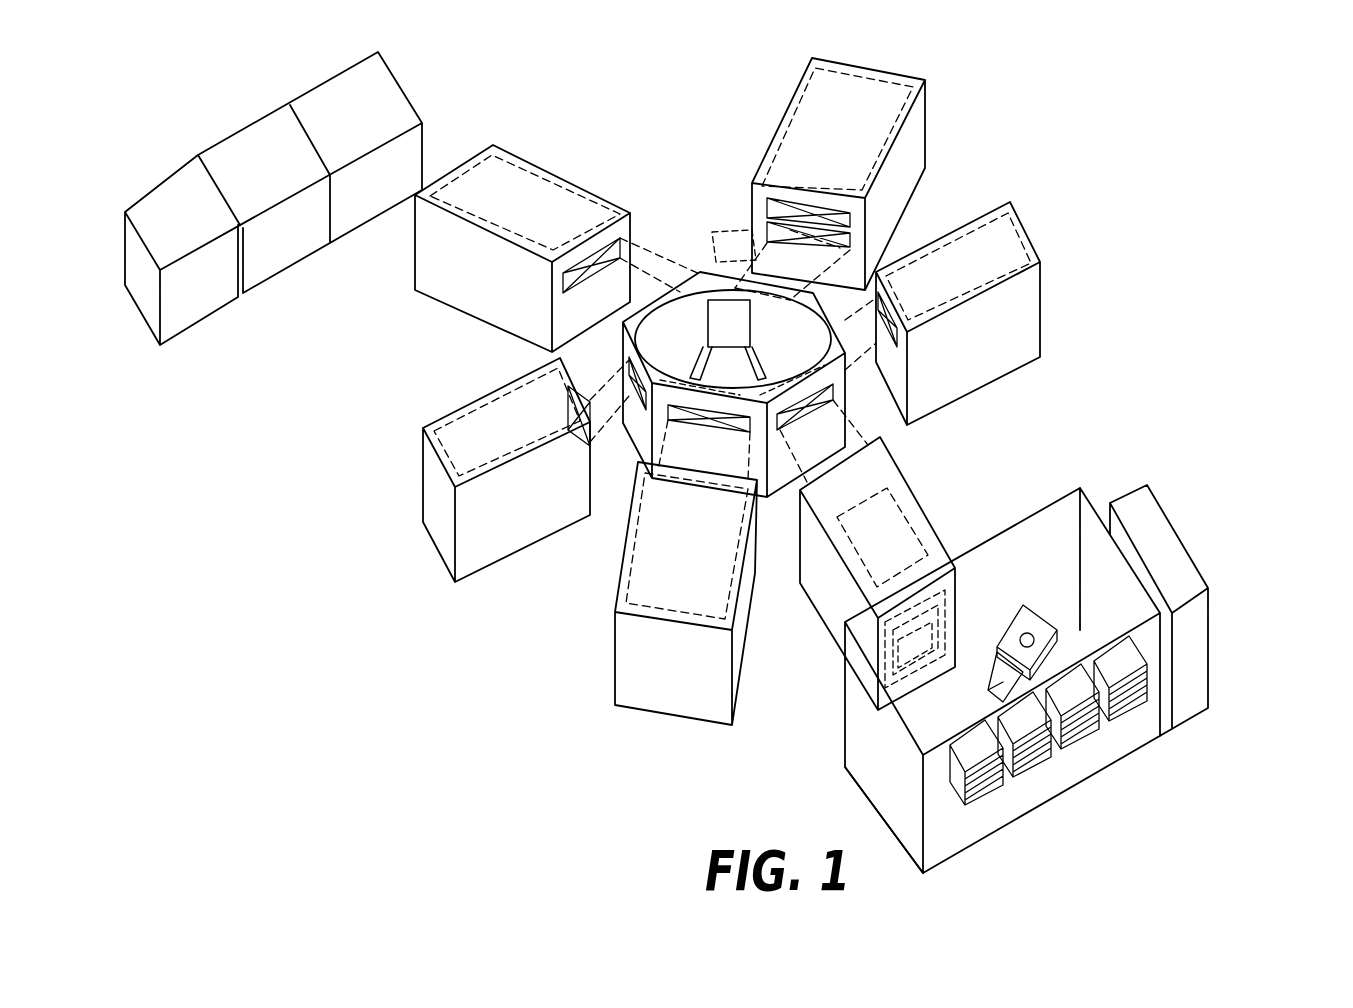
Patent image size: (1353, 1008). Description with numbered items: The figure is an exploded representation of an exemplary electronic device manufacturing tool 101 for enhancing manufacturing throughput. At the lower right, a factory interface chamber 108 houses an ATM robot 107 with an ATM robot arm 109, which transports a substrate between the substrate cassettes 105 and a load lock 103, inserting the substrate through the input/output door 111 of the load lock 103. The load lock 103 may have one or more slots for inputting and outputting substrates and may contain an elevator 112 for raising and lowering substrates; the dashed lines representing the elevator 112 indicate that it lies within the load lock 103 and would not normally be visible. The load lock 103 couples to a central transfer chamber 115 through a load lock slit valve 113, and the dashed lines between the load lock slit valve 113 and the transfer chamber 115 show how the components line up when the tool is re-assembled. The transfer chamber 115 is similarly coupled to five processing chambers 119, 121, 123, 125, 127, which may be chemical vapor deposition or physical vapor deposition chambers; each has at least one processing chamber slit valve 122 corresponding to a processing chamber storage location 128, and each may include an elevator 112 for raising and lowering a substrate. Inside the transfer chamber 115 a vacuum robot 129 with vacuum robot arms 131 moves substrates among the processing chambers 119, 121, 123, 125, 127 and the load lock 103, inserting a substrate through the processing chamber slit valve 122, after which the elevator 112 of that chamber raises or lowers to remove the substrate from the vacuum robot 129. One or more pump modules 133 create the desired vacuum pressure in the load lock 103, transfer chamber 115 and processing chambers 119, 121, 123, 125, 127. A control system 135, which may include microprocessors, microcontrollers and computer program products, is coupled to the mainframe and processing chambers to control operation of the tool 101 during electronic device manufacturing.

The electronic device manufacturing tool 101 is at (1060, 163).
The load lock 103 is at (912, 490).
The substrate cassettes 105 is at (1042, 757).
The ATM robot 107 is at (1040, 610).
The factory interface chamber 108 is at (878, 790).
The ATM robot arm 109 is at (1004, 678).
The input/output door 111 is at (903, 680).
The elevator 112 is at (780, 128).
The load lock slit valve 113 is at (845, 412).
The transfer chamber 115 is at (632, 338).
The processing chamber 119 is at (929, 80).
The processing chamber 121 is at (557, 177).
The processing chamber slit valve 122 is at (592, 263).
The processing chamber 123 is at (468, 403).
The processing chamber 125 is at (617, 626).
The processing chamber 127 is at (1025, 222).
The processing chamber storage location 128 is at (752, 228).
The vacuum robot 129 is at (720, 326).
The vacuum robot arm 131 is at (700, 368).
The pump module 133 is at (425, 138).
The control system 135 is at (1208, 588).